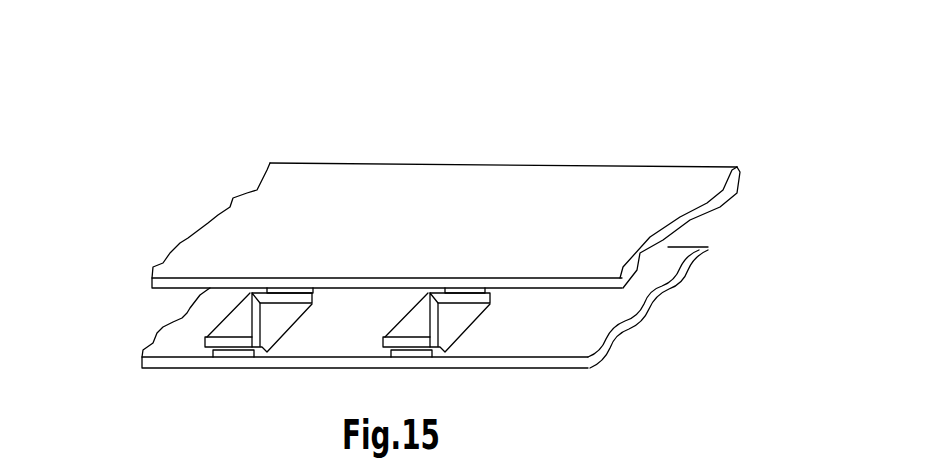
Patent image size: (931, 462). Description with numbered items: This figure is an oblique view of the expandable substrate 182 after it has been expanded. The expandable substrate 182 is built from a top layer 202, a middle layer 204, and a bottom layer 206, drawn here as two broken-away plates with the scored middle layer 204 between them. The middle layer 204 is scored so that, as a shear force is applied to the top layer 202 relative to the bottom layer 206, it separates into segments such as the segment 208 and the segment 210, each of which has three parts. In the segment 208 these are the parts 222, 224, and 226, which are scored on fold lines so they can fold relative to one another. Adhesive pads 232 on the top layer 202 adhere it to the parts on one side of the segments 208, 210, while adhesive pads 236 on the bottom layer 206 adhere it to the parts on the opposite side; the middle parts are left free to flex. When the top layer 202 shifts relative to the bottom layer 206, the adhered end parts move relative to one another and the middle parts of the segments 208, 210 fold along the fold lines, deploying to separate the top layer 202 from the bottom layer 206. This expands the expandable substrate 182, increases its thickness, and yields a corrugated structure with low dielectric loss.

The expandable substrate 182 is at (150, 188).
The top layer 202 is at (714, 168).
The middle layer 204 is at (565, 321).
The bottom layer 206 is at (709, 247).
The segment 208 is at (193, 309).
The segment 210 is at (364, 334).
The part 222 is at (208, 346).
The part 224 is at (259, 323).
The part 226 is at (277, 293).
The adhesive pads 232 is at (287, 290).
The adhesive pads 236 is at (233, 355).